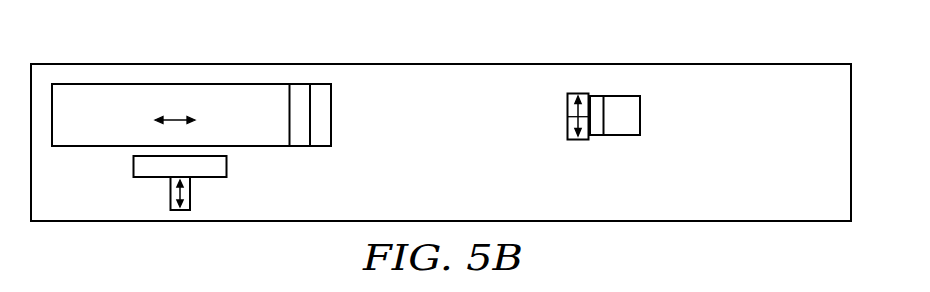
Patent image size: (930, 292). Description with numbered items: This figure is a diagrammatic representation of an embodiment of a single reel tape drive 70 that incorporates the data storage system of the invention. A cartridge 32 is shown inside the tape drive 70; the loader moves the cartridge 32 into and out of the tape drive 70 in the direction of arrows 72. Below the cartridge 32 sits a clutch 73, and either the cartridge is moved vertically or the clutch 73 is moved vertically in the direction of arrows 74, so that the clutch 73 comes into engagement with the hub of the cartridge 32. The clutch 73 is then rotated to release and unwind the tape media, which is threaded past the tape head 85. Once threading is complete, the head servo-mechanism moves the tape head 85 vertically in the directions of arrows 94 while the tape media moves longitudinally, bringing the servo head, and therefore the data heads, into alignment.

The tape drive 70 is at (708, 63).
The cartridge 32 is at (90, 90).
The arrows 72 is at (176, 119).
The clutch 73 is at (228, 165).
The arrows 74 is at (190, 195).
The arrows 94 is at (567, 114).
The tape head 85 is at (642, 116).